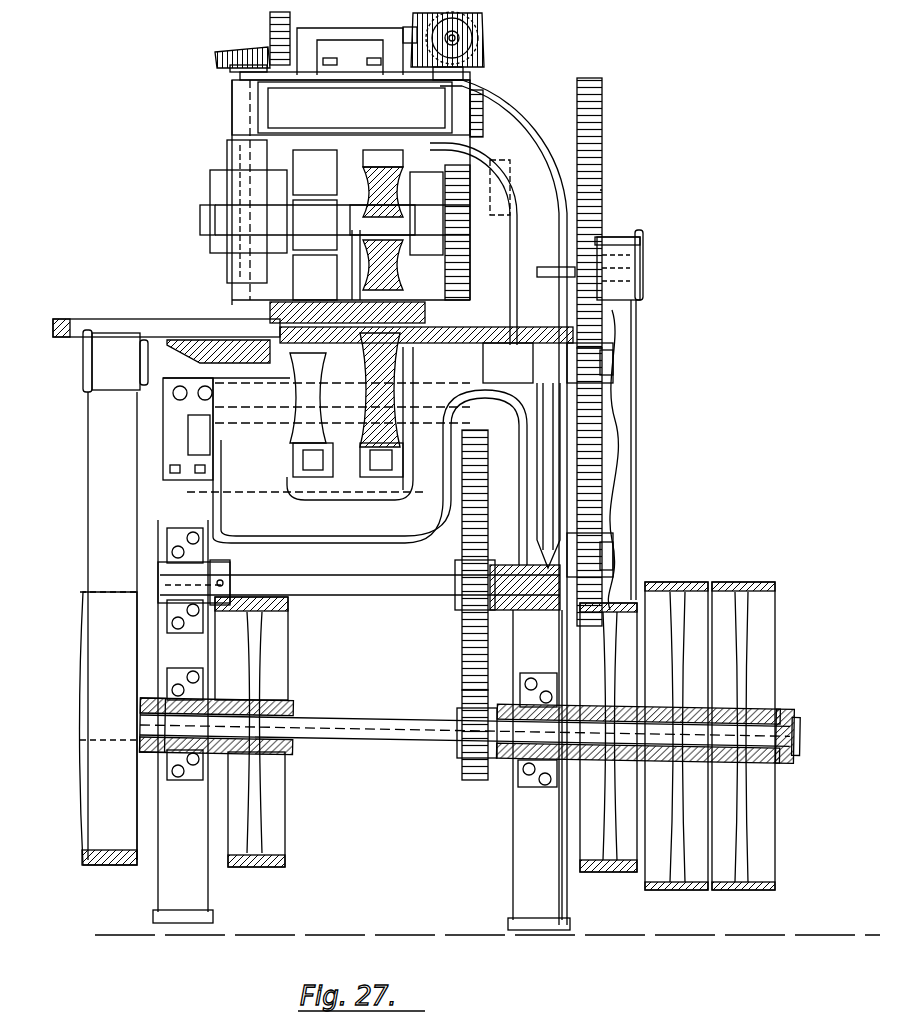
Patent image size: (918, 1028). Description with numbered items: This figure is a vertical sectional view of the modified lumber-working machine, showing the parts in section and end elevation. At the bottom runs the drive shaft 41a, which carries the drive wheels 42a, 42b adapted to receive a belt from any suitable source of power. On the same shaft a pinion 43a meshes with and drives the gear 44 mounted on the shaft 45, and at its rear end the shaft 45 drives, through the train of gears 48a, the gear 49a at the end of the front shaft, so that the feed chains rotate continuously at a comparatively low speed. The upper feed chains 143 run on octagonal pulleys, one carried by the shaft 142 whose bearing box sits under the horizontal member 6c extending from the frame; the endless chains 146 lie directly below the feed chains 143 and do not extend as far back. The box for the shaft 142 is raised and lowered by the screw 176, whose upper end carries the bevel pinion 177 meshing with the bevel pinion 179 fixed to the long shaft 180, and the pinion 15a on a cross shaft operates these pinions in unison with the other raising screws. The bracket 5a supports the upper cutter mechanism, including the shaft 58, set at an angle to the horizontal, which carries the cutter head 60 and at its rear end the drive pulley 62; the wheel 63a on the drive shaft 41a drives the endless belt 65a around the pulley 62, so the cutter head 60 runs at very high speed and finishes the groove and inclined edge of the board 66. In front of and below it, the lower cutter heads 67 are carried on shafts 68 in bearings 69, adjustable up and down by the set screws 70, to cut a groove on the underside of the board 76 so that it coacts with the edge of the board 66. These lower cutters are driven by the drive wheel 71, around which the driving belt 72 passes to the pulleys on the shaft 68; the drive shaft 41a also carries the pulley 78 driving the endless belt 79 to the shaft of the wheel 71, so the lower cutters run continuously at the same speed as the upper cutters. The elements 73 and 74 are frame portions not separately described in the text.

The pinion 15a is at (272, 24).
The bevel pinion 177 is at (484, 66).
The bevel pinion 179 is at (470, 38).
The shaft 180 is at (462, 42).
The screw 176 is at (485, 135).
The shaft 142 is at (352, 152).
The horizontal member 6c is at (307, 107).
The upper feed chains 143 is at (317, 177).
The bracket 5a is at (545, 192).
The gear 49a is at (602, 189).
The drive pulley 62 is at (643, 273).
The shaft 58 is at (545, 278).
The shaft 68 is at (202, 355).
The board 76 is at (275, 315).
The board 66 is at (428, 318).
The cutter head 60 is at (382, 263).
The plate 73 is at (86, 356).
The bearings 69 is at (180, 386).
The set screws 70 is at (195, 425).
The cutter heads 67 is at (325, 380).
The endless chains 146 is at (385, 478).
The driving belt 72 is at (100, 530).
The drive wheel 71 is at (85, 665).
The train of gears 48a is at (602, 490).
The endless belt 65a is at (636, 542).
The shaft 45 is at (385, 598).
The gear 44 is at (470, 620).
The drive shaft 41a is at (350, 727).
The pulley 78 is at (270, 806).
The endless belt 79 is at (255, 867).
The post 74 is at (152, 800).
The pinion 43a is at (472, 780).
The wheel 63a is at (600, 850).
The drive wheel 42a is at (665, 878).
The drive wheel 42b is at (742, 893).